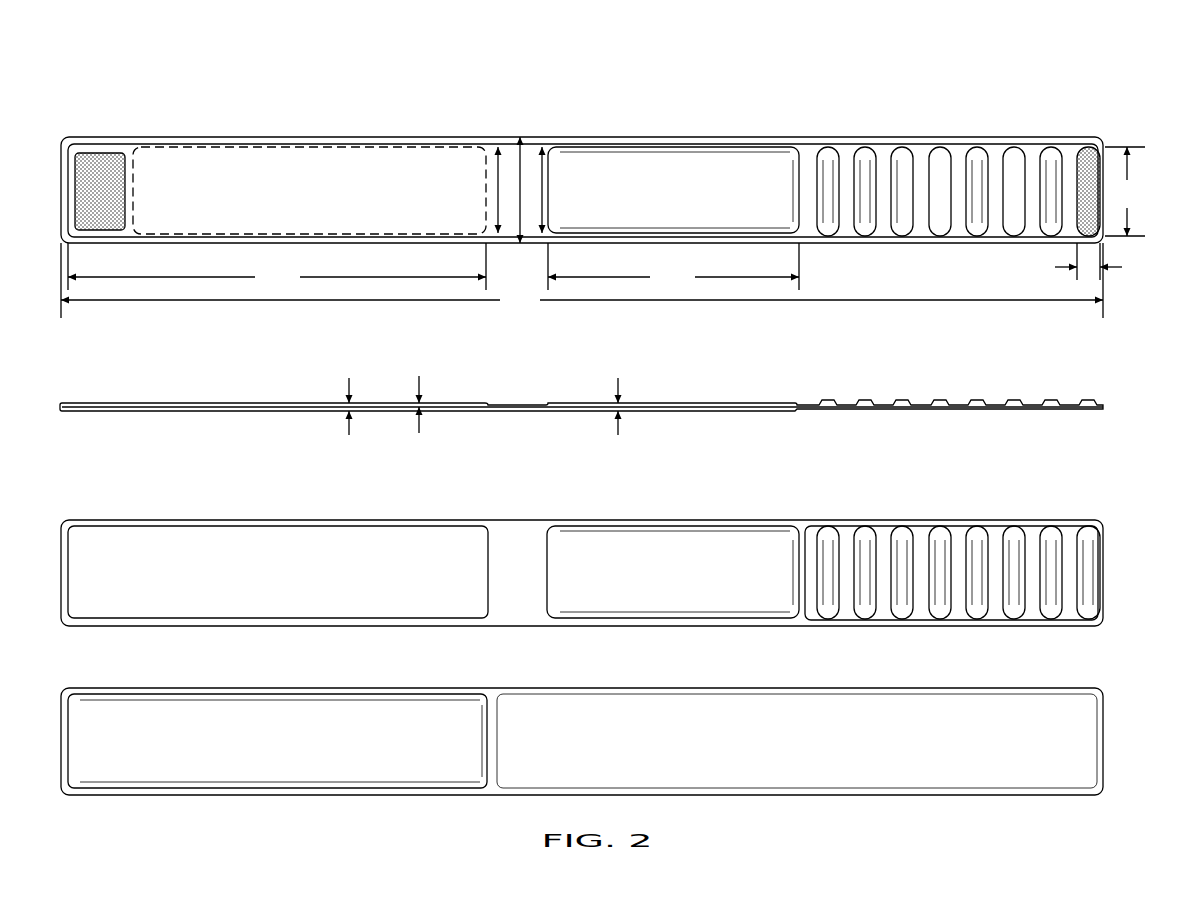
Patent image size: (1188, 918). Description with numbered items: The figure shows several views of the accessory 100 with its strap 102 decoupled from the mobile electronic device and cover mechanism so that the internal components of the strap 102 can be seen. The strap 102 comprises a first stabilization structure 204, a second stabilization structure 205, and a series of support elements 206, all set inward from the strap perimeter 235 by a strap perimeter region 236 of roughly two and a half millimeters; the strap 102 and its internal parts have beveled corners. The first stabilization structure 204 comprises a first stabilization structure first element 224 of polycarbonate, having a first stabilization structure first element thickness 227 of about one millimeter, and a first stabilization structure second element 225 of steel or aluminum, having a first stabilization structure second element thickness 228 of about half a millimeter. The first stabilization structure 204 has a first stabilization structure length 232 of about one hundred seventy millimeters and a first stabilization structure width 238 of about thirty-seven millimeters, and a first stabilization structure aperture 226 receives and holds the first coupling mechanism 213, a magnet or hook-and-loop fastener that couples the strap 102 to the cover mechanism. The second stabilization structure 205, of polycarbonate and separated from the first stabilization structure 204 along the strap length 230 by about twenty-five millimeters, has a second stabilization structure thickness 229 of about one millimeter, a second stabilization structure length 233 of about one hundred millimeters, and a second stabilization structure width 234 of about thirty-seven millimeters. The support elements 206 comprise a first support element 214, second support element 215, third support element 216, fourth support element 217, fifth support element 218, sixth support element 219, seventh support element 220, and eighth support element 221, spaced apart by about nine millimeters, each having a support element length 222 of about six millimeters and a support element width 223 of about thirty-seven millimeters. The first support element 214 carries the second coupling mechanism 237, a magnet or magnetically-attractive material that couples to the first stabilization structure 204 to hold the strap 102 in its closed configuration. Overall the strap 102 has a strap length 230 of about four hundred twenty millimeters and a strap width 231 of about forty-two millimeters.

The accessory 100 is at (58, 168).
The strap 102 is at (63, 205).
The first stabilization structure 204 is at (152, 157).
The second stabilization structure 205 is at (585, 156).
The support elements 206 is at (915, 252).
The first coupling mechanism 213 is at (96, 160).
The first support element 214 is at (1088, 152).
The second support element 215 is at (1051, 157).
The third support element 216 is at (1014, 157).
The fourth support element 217 is at (977, 157).
The fifth support element 218 is at (939, 157).
The sixth support element 219 is at (902, 157).
The seventh support element 220 is at (865, 157).
The eighth support element 221 is at (828, 157).
The support element length 222 is at (1066, 261).
The support element width 223 is at (1125, 191).
The first stabilization structure first element 224 is at (98, 232).
The first stabilization structure second element 225 is at (172, 224).
The first stabilization structure aperture 226 is at (113, 141).
The first stabilization structure first element thickness 227 is at (419, 393).
The first stabilization structure second element thickness 228 is at (349, 394).
The second stabilization structure thickness 229 is at (618, 394).
The strap length 230 is at (582, 280).
The strap width 231 is at (525, 170).
The first stabilization structure length 232 is at (277, 266).
The second stabilization structure length 233 is at (673, 266).
The second stabilization structure width 234 is at (543, 190).
The strap perimeter 235 is at (343, 137).
The strap perimeter region 236 is at (690, 143).
The second coupling mechanism 237 is at (1097, 158).
The first stabilization structure width 238 is at (497, 190).